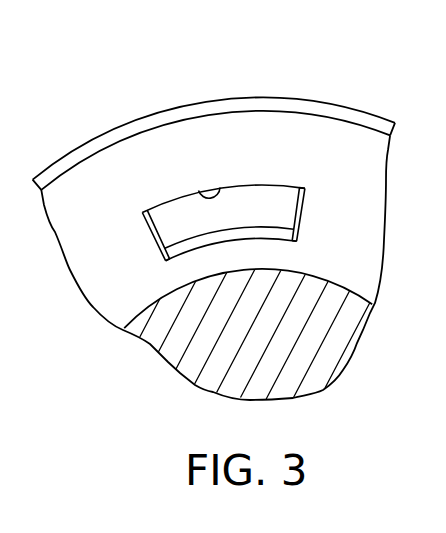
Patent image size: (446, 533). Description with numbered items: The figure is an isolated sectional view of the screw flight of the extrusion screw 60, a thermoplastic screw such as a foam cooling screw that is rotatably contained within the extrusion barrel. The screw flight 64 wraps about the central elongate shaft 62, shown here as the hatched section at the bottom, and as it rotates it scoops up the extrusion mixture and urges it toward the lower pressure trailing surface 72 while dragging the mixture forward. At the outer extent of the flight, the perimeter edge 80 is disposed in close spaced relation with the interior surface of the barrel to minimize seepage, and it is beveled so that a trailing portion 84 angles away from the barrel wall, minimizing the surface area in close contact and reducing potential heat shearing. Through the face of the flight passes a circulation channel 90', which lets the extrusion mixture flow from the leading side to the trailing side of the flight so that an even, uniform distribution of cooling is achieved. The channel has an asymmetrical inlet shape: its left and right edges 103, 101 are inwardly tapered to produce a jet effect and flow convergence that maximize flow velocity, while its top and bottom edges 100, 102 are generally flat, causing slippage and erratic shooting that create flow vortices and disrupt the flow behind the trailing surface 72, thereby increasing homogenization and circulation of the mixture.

The extrusion screw 60 is at (189, 89).
The central elongate shaft 62 is at (192, 371).
The screw flight 64 is at (373, 164).
The trailing surface 72 is at (261, 128).
The perimeter edge 80 is at (108, 124).
The trailing portion 84 is at (330, 113).
The circulation channel 90' is at (263, 220).
The top edge 100 is at (200, 193).
The right edge 101 is at (298, 220).
The bottom edge 102 is at (225, 233).
The left edge 103 is at (153, 237).